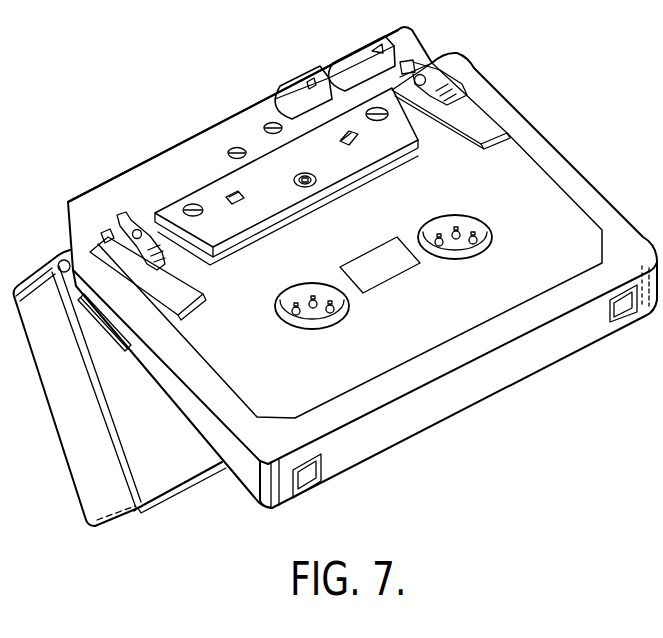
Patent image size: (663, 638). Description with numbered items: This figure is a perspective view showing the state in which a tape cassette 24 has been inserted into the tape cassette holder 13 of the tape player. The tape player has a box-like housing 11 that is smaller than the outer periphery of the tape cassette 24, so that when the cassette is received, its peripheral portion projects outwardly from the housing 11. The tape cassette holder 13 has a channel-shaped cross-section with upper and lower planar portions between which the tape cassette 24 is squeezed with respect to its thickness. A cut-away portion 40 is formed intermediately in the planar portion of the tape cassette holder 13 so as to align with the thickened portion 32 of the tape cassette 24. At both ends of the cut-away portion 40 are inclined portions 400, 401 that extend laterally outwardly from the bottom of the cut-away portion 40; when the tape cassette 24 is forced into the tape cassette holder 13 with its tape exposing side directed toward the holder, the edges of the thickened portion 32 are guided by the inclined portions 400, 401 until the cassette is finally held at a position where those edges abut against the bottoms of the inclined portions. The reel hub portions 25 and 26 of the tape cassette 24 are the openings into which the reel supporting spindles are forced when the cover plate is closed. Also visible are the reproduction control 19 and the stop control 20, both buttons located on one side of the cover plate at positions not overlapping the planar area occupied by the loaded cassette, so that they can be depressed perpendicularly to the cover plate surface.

The housing 11 is at (80, 485).
The tape cassette holder 13 is at (177, 146).
The reproduction control 19 is at (357, 50).
The stop control 20 is at (290, 84).
The tape cassette 24 is at (415, 428).
The reel hub portion 25 is at (345, 313).
The reel hub portion 26 is at (480, 222).
The thickened portion 32 is at (287, 203).
The cut-away portion 40 is at (212, 185).
The inclined portion 400 is at (200, 290).
The inclined portion 401 is at (460, 140).